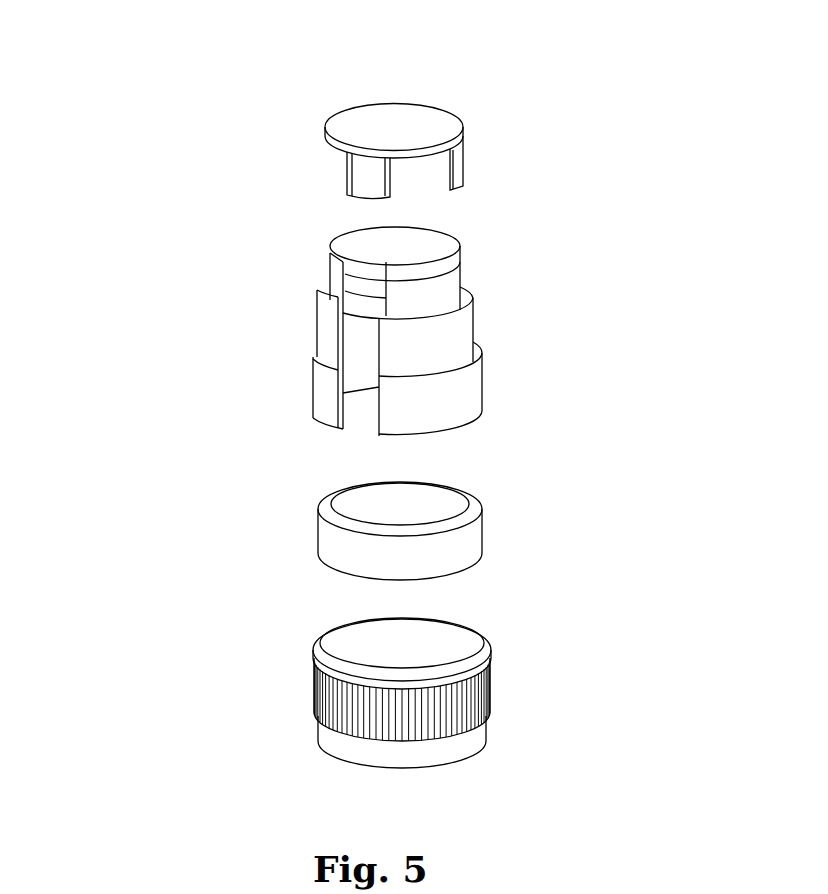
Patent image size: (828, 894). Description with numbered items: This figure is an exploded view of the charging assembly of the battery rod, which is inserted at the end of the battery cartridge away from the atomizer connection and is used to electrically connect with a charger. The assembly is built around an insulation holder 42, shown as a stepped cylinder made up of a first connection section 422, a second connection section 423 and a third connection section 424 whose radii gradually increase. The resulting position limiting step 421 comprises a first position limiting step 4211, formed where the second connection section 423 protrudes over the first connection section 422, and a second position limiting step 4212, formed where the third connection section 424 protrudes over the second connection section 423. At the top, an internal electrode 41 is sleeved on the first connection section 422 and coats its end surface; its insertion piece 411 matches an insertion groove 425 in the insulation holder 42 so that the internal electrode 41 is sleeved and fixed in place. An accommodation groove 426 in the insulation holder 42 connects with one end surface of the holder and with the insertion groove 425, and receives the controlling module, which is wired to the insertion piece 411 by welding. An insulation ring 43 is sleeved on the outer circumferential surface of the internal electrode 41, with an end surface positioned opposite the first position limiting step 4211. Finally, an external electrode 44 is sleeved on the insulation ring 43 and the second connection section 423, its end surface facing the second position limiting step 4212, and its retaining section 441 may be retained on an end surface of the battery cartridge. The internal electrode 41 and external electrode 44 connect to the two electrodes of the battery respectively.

The internal electrode 41 is at (452, 108).
The insertion piece 411 is at (460, 172).
The insulation holder 42 is at (362, 357).
The position limiting step 421 is at (206, 329).
The first position limiting step 4211 is at (317, 297).
The second position limiting step 4212 is at (317, 352).
The first connection section 422 is at (458, 272).
The second connection section 423 is at (468, 332).
The third connection section 424 is at (470, 400).
The insertion groove 425 is at (368, 273).
The accommodation groove 426 is at (373, 398).
The insulation ring 43 is at (468, 541).
The external electrode 44 is at (416, 668).
The retaining section 441 is at (310, 650).